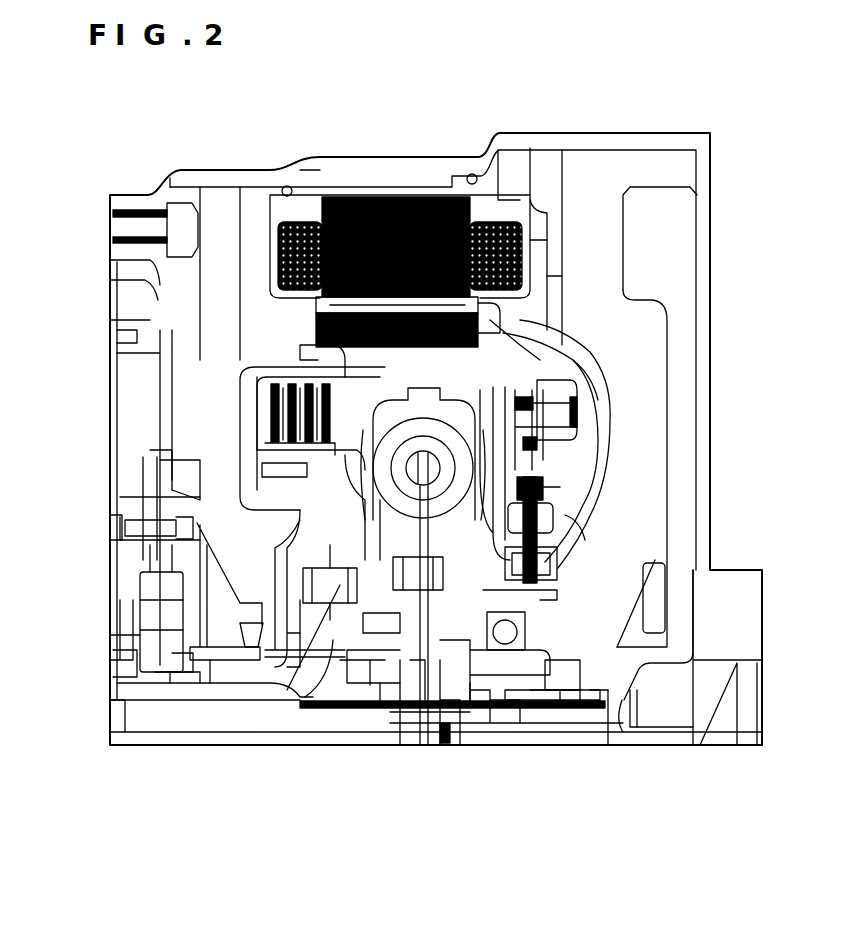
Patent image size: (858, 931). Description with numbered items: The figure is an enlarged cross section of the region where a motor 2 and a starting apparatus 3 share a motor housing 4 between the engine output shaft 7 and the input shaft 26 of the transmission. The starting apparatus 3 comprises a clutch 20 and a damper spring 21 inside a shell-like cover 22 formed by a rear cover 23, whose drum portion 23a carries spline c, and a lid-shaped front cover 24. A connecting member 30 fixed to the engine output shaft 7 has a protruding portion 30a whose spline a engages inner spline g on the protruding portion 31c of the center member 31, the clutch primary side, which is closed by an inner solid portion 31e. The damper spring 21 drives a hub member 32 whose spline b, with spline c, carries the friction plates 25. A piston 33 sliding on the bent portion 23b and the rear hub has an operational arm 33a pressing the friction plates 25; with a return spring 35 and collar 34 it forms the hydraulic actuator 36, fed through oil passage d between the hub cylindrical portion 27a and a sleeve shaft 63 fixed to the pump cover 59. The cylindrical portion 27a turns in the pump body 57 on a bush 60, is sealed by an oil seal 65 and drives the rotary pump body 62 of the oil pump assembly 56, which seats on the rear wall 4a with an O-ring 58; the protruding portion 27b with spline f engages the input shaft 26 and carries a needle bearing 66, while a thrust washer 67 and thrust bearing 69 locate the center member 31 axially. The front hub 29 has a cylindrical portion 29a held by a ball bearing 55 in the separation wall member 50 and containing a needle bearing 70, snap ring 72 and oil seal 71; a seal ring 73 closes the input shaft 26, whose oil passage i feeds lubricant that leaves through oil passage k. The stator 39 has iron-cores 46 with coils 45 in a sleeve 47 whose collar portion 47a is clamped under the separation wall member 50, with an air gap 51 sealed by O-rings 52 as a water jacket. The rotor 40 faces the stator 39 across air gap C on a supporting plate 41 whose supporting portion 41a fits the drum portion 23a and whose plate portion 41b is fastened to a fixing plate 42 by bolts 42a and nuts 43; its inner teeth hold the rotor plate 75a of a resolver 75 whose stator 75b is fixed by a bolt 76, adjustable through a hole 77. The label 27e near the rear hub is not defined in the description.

The motor 2 is at (405, 150).
The starting apparatus 3 is at (258, 275).
The motor housing 4 is at (345, 160).
The rear wall 4a is at (117, 355).
The engine output shaft 7 is at (753, 622).
The clutch 20 is at (240, 367).
The damper spring 21 is at (557, 412).
The cover 22 is at (230, 273).
The rear cover 23 is at (243, 365).
The drum portion 23a is at (270, 342).
The bending portion 23b is at (272, 512).
The front cover 24 is at (500, 472).
The friction plates 25 is at (257, 403).
The input shaft 26 is at (193, 735).
The cylindrical portion 27a is at (262, 735).
The protruding portion 27b is at (400, 738).
The oil passage 27e is at (307, 735).
The front hub 29 is at (453, 725).
The cylindrical portion 29a is at (530, 650).
The connecting member 30 is at (648, 712).
The protruding portion 30a is at (557, 720).
The center member 31 is at (470, 725).
The protruding portion 31c is at (545, 680).
The inner solid portion 31e is at (498, 730).
The hub member 32 is at (298, 518).
The piston 33 is at (287, 543).
The operational arm 33a is at (260, 427).
The collar 34 is at (396, 570).
The return spring 35 is at (331, 568).
The hydraulic actuator 36 is at (167, 460).
The stator 39 is at (424, 200).
The rotor 40 is at (515, 300).
The supporting plate member 41 is at (515, 360).
The supporting portion 41a is at (505, 355).
The plate portion 41b is at (600, 362).
The fixing plate 42 is at (535, 442).
The bolts 42a is at (542, 432).
The nuts 43 is at (572, 382).
The coils 45 is at (537, 242).
The iron-cores 46 is at (455, 196).
The sleeve 47 is at (297, 178).
The collar portion 47a is at (520, 165).
The separation wall member 50 is at (555, 165).
The air gap 51 is at (378, 170).
The O-rings 52 is at (281, 184).
The ball bearing 55 is at (512, 625).
The oil pump assembly 56 is at (100, 529).
The pump body 57 is at (150, 547).
The O-ring 58 is at (163, 488).
The pump cover 59 is at (127, 613).
The bush 60 is at (238, 735).
The rotary pump body 62 is at (120, 642).
The sleeve shaft 63 is at (157, 735).
The oil seal 65 is at (287, 740).
The needle bearing 66 is at (350, 735).
The thrust washer 67 is at (395, 610).
The thrust bearing 69 is at (437, 725).
The needle bearing 70 is at (505, 730).
The oil seal 71 is at (572, 717).
The snap ring 72 is at (533, 725).
The seal ring 73 is at (417, 725).
The resolver 75 is at (585, 535).
The rotor plate 75a is at (547, 485).
The stator 75b is at (543, 553).
The bolt 76 is at (508, 562).
The hole 77 is at (578, 527).
The air gap C is at (556, 277).
The spline a is at (592, 715).
The spline b is at (345, 452).
The spline c is at (338, 386).
The oil passage d is at (213, 735).
The spline f is at (378, 735).
The inner spline g is at (548, 720).
The oil passage i is at (125, 738).
The oil passage k is at (176, 735).